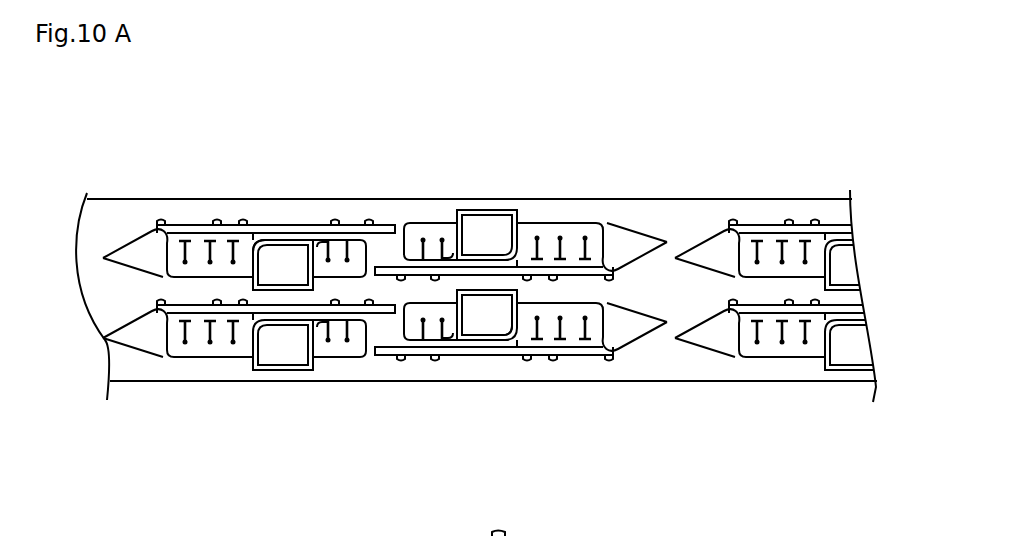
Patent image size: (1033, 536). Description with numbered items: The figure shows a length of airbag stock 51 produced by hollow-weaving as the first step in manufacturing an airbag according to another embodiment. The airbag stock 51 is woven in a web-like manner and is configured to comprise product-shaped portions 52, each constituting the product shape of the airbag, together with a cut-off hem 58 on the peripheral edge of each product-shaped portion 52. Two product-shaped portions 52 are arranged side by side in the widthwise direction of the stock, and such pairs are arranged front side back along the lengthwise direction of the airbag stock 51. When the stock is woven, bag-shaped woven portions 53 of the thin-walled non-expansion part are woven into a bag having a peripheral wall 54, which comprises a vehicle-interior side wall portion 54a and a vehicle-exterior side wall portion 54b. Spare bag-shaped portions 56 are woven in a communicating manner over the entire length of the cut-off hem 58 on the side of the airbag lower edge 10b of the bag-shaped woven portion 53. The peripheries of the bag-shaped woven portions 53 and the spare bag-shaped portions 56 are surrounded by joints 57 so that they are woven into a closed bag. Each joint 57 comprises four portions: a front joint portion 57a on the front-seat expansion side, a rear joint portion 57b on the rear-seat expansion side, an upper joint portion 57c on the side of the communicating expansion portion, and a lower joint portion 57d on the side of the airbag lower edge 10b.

The airbag lower edge 10b is at (197, 358).
The airbag stock 51 is at (347, 105).
The product-shaped portion 52 is at (303, 236).
The bag-shaped woven portion 53 is at (303, 334).
The peripheral wall 54 is at (466, 177).
The vehicle-interior side wall portion 54a is at (477, 234).
The vehicle-exterior side wall portion 54b is at (507, 243).
The spare bag-shaped portion 56 is at (310, 338).
The joint 57 is at (256, 419).
The front joint portion 57a is at (253, 340).
The rear joint portion 57b is at (299, 362).
The upper joint portion 57c is at (273, 324).
The lower joint portion 57d is at (289, 368).
The cut-off hem 58 is at (270, 210).